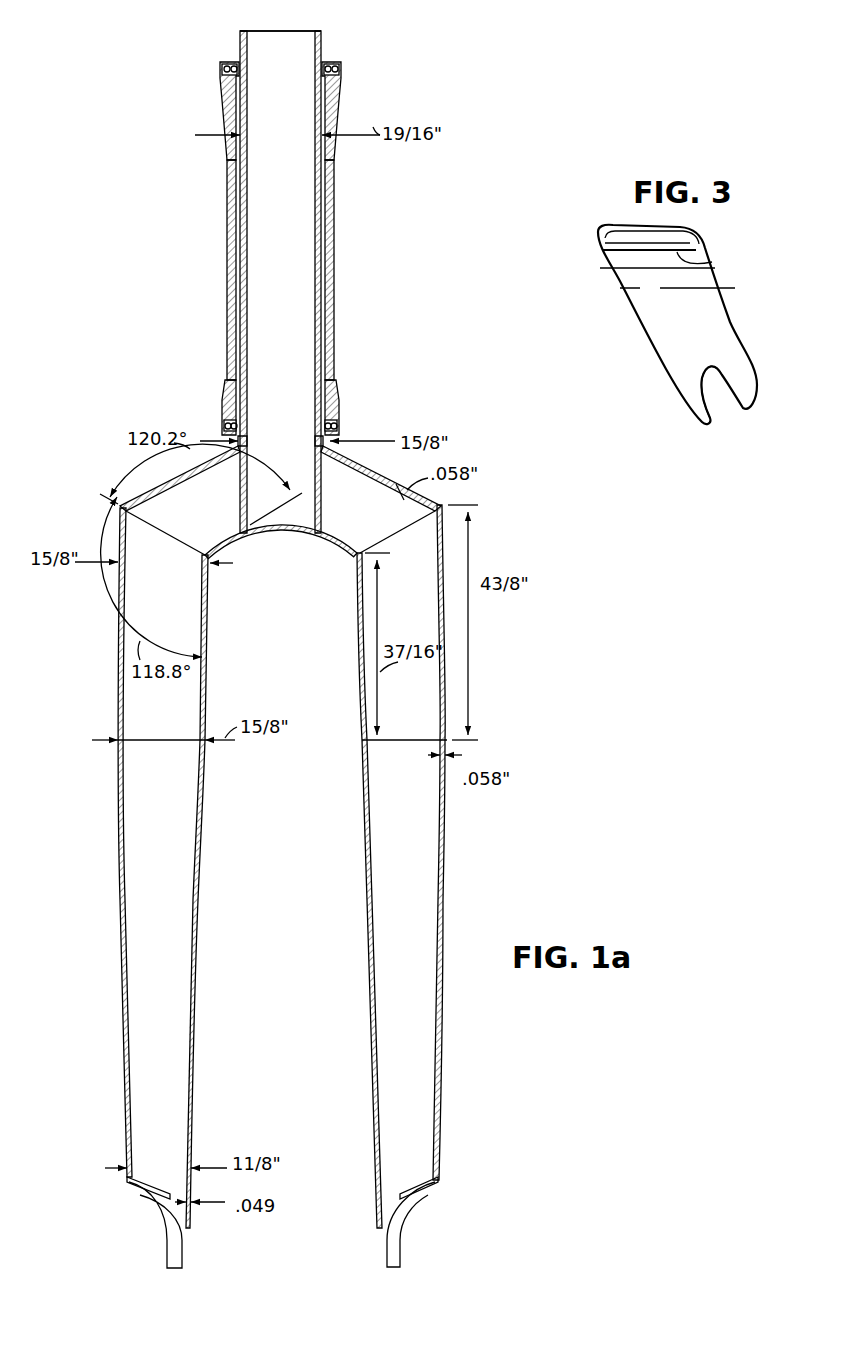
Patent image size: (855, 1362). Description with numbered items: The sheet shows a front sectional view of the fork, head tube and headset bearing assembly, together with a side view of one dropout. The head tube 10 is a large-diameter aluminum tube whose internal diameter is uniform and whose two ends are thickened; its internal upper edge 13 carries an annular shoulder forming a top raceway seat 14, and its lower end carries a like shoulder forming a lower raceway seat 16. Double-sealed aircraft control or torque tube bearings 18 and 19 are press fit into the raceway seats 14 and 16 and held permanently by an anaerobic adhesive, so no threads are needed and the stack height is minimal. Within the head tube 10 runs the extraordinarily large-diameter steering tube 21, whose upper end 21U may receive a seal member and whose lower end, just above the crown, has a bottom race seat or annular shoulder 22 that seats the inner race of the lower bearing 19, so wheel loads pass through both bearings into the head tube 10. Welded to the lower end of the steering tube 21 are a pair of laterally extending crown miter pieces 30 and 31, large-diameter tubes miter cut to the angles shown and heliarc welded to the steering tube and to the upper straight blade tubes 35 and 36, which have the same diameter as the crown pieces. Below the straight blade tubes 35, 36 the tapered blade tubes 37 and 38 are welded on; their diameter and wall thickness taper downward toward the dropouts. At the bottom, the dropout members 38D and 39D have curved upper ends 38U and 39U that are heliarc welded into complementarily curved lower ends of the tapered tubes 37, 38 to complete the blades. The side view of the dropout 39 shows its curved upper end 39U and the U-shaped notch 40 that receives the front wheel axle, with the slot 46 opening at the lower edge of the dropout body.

In FIG. 1A, the head tube 10 is at (334, 218).
In FIG. 1A, the steering tube 21 is at (321, 282).
In FIG. 1A, the upper end of steering tube 21U is at (322, 36).
In FIG. 1A, the internal upper edge 13 is at (340, 62).
In FIG. 1A, the top raceway seat 14 is at (222, 80).
In FIG. 1A, the upper torque tube bearing 18 is at (226, 60).
In FIG. 1A, the lower torque tube bearing 19 is at (323, 400).
In FIG. 1A, the lower raceway seat 16 is at (338, 420).
In FIG. 1A, the bottom race seat 22 is at (248, 446).
In FIG. 1A, the crown miter piece 30 is at (145, 490).
In FIG. 1A, the crown miter piece 31 is at (368, 470).
In FIG. 1A, the straight blade tube 35 is at (360, 683).
In FIG. 1A, the straight blade tube 36 is at (207, 693).
In FIG. 1A, the tapered blade tube 37 is at (443, 915).
In FIG. 1A, the tapered blade tube 38 is at (120, 912).
In FIG. 1A, the upper end of dropout 38U is at (140, 1190).
In FIG. 1A, the dropout member 38D is at (167, 1252).
In FIG. 1A, the upper end of dropout 39U is at (425, 1190).
In FIG. 3, the upper end of dropout 39U is at (690, 257).
In FIG. 1A, the dropout member 39D is at (400, 1260).
In FIG. 3, the dropout 39 is at (691, 324).
In FIG. 3, the U-shaped notch 40 is at (692, 323).
In FIG. 3, the axle slot 46 is at (727, 388).